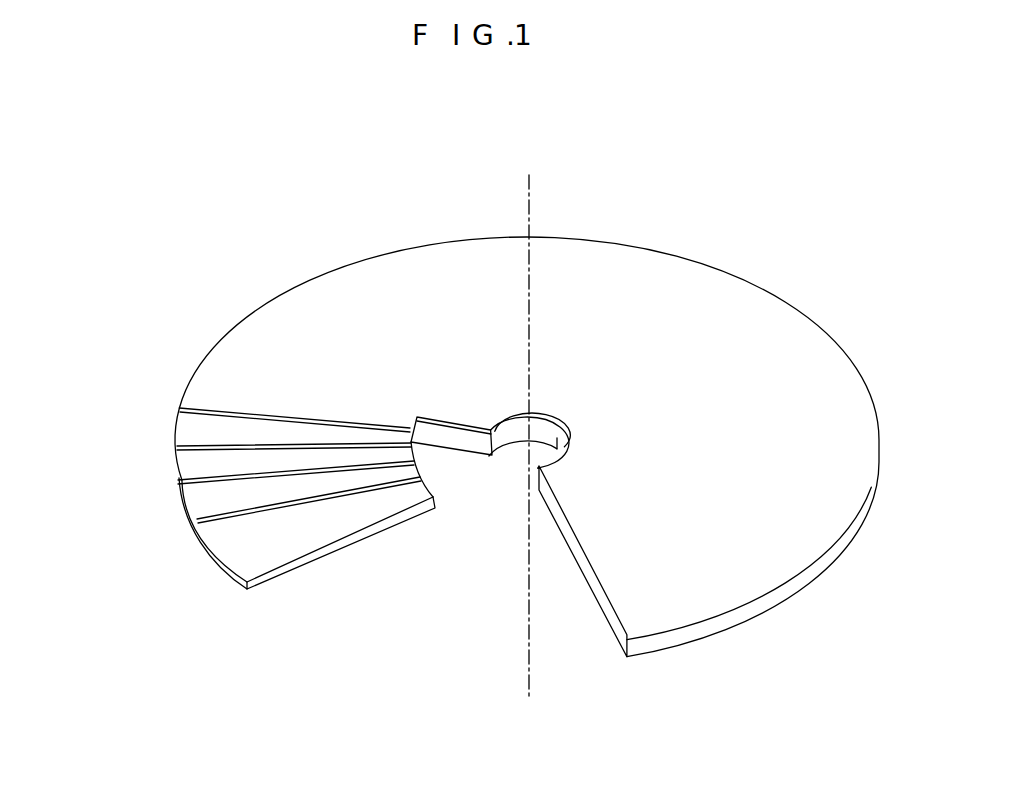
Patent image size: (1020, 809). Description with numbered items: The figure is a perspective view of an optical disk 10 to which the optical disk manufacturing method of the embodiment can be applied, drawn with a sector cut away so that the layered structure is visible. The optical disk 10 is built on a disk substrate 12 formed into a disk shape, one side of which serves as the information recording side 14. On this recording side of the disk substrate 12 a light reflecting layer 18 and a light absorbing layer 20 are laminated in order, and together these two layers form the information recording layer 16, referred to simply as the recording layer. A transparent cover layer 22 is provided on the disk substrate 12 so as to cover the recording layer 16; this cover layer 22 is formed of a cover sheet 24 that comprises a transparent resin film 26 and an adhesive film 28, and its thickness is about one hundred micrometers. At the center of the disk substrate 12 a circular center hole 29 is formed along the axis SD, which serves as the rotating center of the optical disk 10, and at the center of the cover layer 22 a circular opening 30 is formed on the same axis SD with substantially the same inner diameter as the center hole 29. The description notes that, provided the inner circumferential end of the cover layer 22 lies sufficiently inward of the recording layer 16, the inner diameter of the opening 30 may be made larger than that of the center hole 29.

The optical disk 10 is at (527, 427).
The disk substrate 12 is at (302, 493).
The information recording side 14 is at (298, 458).
The information recording layer 16 is at (244, 522).
The light reflecting layer 18 is at (224, 514).
The light absorbing layer 20 is at (208, 478).
The transparent cover layer 22 is at (222, 444).
The cover sheet 24 is at (222, 447).
The transparent resin film 26 is at (210, 411).
The adhesive film 28 is at (209, 447).
The center hole 29 is at (572, 427).
The opening 30 is at (543, 418).
The axis SD is at (530, 203).